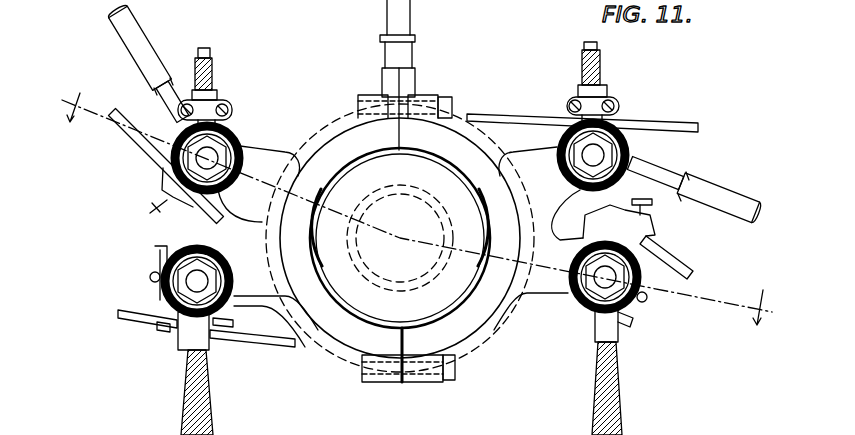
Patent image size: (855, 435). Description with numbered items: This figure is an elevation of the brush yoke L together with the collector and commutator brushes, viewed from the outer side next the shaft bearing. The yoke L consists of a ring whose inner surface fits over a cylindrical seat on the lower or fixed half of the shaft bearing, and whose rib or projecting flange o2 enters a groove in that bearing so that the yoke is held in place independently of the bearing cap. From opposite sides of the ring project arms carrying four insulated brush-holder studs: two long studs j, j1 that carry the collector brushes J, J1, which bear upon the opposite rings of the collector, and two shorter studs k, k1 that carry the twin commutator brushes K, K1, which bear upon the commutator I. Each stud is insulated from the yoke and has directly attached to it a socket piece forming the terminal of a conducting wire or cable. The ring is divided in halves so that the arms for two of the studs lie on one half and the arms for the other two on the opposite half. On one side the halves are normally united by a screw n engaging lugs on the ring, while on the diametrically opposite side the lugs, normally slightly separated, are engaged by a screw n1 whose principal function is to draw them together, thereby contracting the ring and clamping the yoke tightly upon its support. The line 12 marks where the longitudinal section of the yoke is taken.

The commutator I is at (347, 375).
The brush yoke L is at (343, 157).
The screw n is at (440, 97).
The screw n1 is at (450, 365).
The rib or projecting flange o2 is at (417, 328).
The long stud j1 is at (230, 147).
The collector brush J1 is at (167, 152).
The long stud j is at (596, 154).
The collector brush J is at (660, 128).
The short stud k1 is at (193, 282).
The commutator brush K1 is at (285, 347).
The short stud k is at (578, 298).
The commutator brush K is at (675, 263).
The section line 12 is at (420, 205).